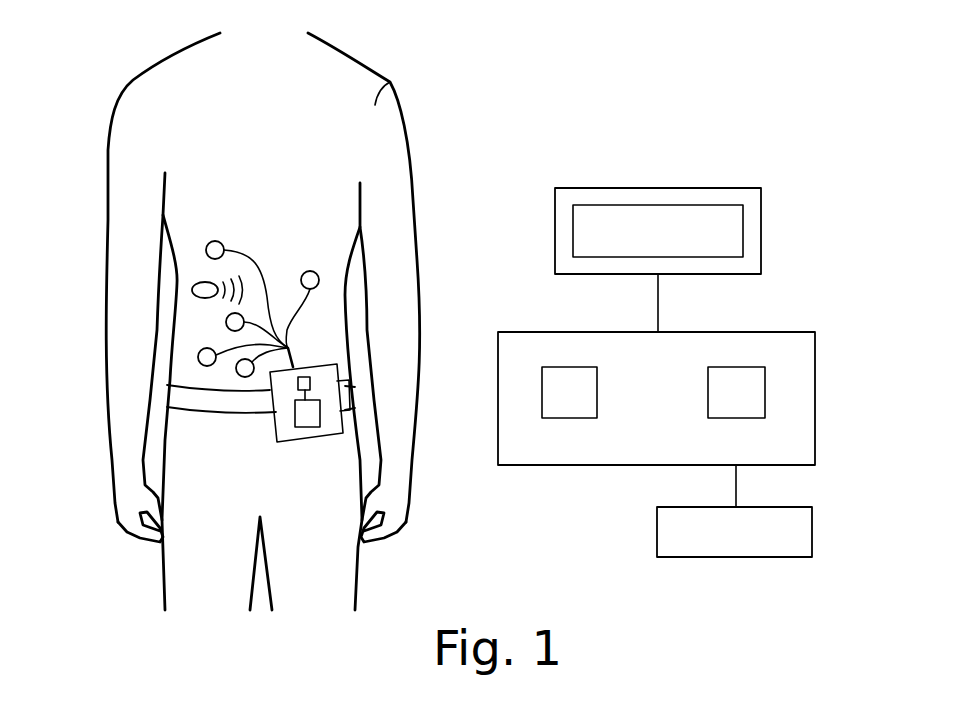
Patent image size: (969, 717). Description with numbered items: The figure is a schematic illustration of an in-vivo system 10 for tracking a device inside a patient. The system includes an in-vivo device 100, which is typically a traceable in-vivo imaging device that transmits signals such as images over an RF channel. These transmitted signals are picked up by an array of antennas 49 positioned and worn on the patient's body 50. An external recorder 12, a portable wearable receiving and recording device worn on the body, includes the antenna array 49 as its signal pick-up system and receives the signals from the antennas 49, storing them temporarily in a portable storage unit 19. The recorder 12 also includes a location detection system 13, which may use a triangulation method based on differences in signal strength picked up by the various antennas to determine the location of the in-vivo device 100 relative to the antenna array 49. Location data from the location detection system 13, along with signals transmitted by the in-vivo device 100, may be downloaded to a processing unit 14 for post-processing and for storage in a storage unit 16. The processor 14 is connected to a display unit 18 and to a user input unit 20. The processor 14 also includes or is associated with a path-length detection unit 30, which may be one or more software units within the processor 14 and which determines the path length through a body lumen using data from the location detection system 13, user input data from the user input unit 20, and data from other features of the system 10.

The in-vivo system 10 is at (550, 103).
The external recorder 12 is at (340, 380).
The location detection system 13 is at (317, 375).
The processing unit 14 is at (815, 415).
The storage unit 16 is at (738, 367).
The display unit 18 is at (762, 233).
The portable storage unit 19 is at (310, 427).
The user input unit 20 is at (755, 557).
The path-length detection unit 30 is at (558, 418).
The antenna array 49 is at (206, 242).
The patient's body 50 is at (390, 82).
The in-vivo device 100 is at (193, 297).